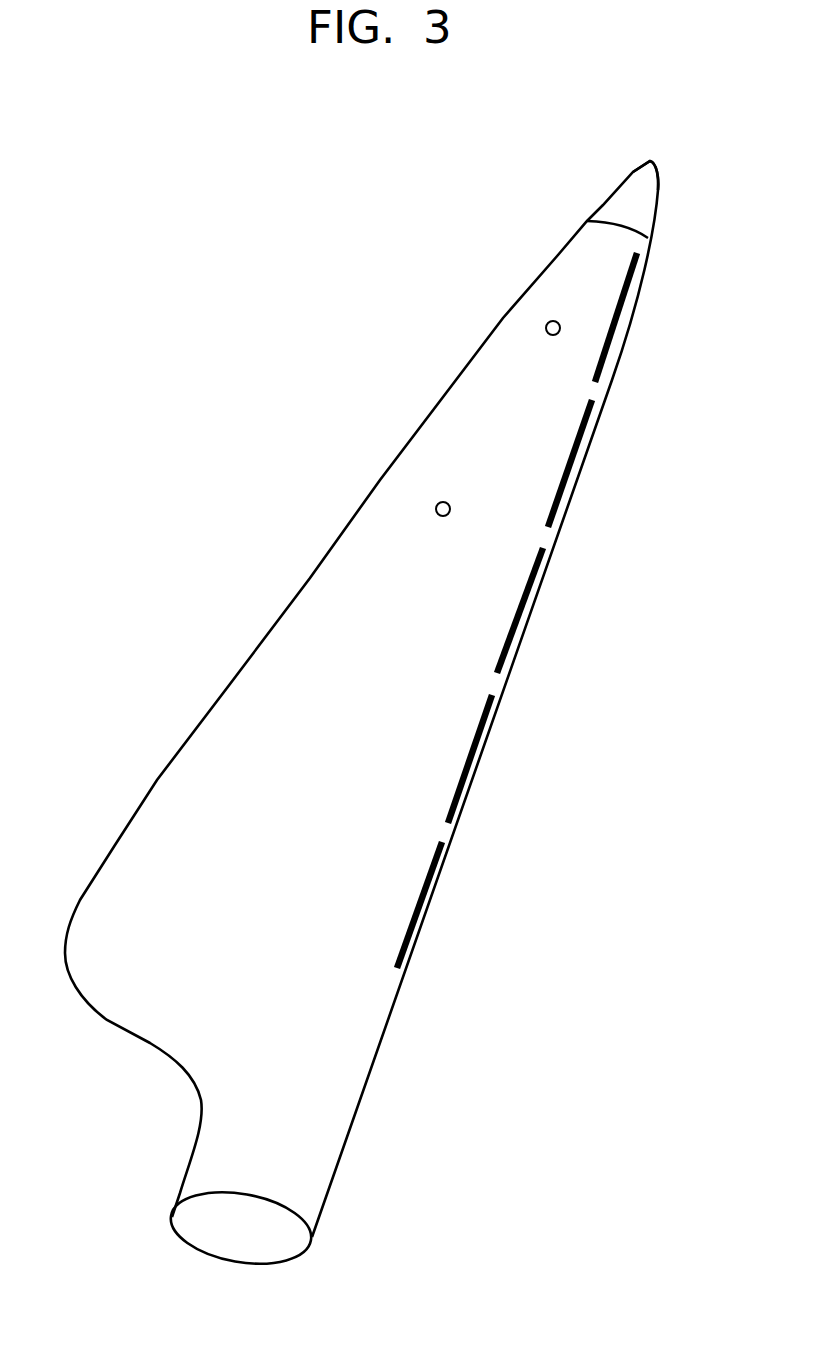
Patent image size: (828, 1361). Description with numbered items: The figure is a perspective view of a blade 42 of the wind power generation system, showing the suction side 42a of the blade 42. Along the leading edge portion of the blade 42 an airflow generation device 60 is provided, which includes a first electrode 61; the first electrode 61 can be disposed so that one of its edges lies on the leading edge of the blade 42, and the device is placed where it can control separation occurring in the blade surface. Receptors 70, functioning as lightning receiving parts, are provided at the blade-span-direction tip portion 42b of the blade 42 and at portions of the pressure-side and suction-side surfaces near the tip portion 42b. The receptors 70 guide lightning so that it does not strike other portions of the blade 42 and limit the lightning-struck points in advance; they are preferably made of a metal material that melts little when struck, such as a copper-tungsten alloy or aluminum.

The blade 42 is at (381, 693).
The suction side 42a is at (363, 605).
The tip portion 42b is at (649, 161).
The airflow generation device 60 is at (517, 610).
The first electrode 61 is at (415, 923).
The receptor 70 is at (637, 208).